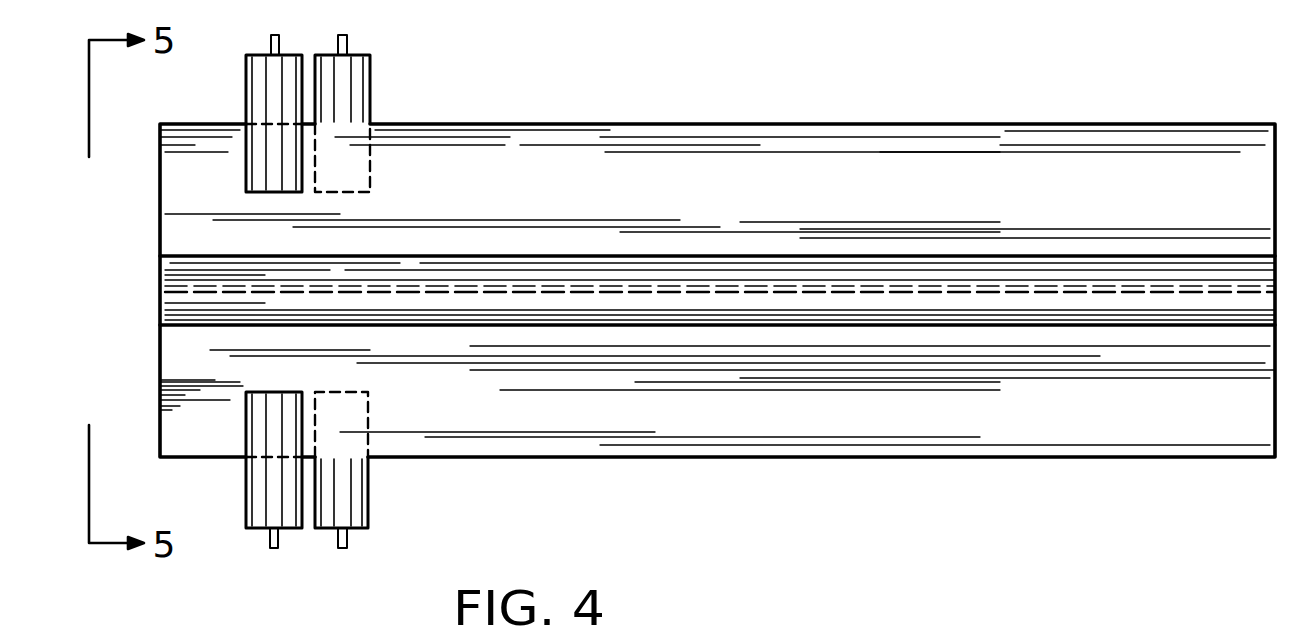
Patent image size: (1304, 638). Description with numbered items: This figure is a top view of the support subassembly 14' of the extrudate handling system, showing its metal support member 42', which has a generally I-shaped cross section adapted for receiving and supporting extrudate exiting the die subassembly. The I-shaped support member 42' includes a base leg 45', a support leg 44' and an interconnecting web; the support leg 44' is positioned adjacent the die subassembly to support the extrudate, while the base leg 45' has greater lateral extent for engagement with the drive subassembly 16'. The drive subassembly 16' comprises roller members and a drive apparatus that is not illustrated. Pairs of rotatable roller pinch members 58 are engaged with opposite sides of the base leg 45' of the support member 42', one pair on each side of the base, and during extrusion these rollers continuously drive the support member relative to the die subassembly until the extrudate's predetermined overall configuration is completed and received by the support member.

The support subassembly 14' is at (717, 245).
The drive subassembly 16' is at (361, 460).
The support member 42' is at (717, 153).
The support leg 44' is at (720, 312).
The base leg 45' is at (385, 125).
The rotatable roller pinch members 58 is at (276, 548).